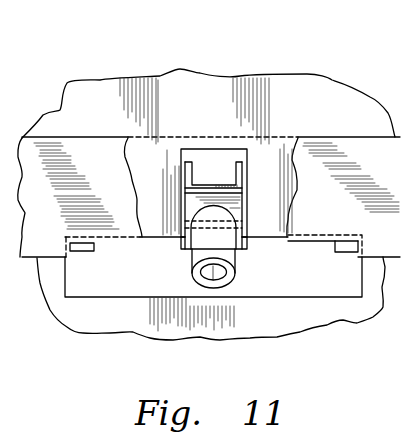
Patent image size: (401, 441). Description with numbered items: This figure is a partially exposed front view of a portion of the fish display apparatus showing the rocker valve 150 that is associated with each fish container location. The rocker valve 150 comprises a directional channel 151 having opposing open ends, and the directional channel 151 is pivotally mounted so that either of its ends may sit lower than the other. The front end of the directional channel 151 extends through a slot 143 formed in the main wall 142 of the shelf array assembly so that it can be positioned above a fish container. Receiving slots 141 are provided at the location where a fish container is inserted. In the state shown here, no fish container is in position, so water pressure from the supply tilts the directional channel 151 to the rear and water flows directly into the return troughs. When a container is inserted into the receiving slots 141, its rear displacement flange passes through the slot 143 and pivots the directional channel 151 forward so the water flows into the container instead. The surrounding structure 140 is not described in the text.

The housing body 140 is at (393, 153).
The receiving slots 141 is at (82, 251).
The main wall 142 is at (305, 107).
The slot 143 is at (288, 297).
The rocker valve 150 is at (178, 248).
The directional channel 151 is at (203, 185).